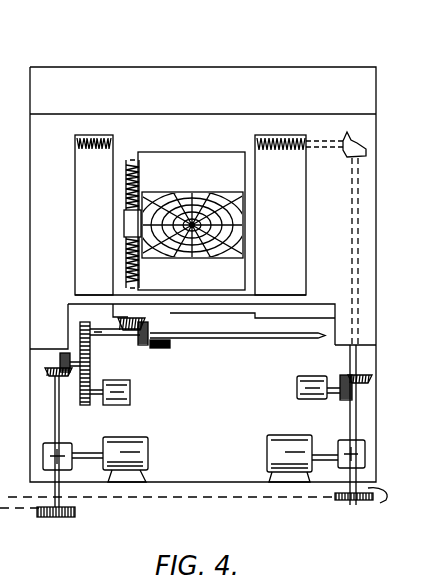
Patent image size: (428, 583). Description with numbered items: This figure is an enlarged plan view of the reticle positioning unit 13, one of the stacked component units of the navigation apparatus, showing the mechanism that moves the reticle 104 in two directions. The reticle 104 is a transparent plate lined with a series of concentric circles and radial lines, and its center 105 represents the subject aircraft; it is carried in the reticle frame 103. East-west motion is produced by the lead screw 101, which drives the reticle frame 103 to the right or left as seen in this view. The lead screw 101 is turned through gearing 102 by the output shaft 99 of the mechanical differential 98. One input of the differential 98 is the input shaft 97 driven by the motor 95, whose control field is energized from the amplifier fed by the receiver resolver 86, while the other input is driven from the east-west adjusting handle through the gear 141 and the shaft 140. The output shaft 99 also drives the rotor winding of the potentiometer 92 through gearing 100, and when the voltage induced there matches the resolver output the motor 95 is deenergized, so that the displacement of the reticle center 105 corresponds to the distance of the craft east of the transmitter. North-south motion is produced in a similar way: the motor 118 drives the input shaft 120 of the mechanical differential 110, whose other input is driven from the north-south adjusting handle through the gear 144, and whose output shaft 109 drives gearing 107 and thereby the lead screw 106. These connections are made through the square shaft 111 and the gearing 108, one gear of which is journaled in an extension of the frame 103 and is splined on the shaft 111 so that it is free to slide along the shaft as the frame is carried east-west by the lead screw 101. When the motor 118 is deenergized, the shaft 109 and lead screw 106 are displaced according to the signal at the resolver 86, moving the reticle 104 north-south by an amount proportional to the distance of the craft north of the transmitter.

The reticle positioning unit 13 is at (292, 67).
The gearing 102 is at (364, 112).
The lead screw 106 is at (126, 190).
The lead screw 101 is at (303, 151).
The reticle frame 103 is at (254, 221).
The reticle 104 is at (202, 200).
The reticle center 105 is at (200, 258).
The gearing 100 is at (343, 373).
The gearing 108 is at (114, 318).
The square shaft 111 is at (242, 340).
The gearing 107 is at (99, 364).
The output shaft 109 is at (59, 421).
The input shaft 120 is at (89, 452).
The receiver resolver 86 is at (36, 457).
The mechanical differential 110 is at (43, 446).
The motor 118 is at (148, 448).
The gear 144 is at (75, 512).
The output shaft 99 is at (350, 359).
The potentiometer 92 is at (297, 391).
The motor 95 is at (290, 433).
The input shaft 97 is at (325, 447).
The mechanical differential 98 is at (338, 470).
The gear 141 is at (350, 500).
The shaft 140 is at (371, 509).